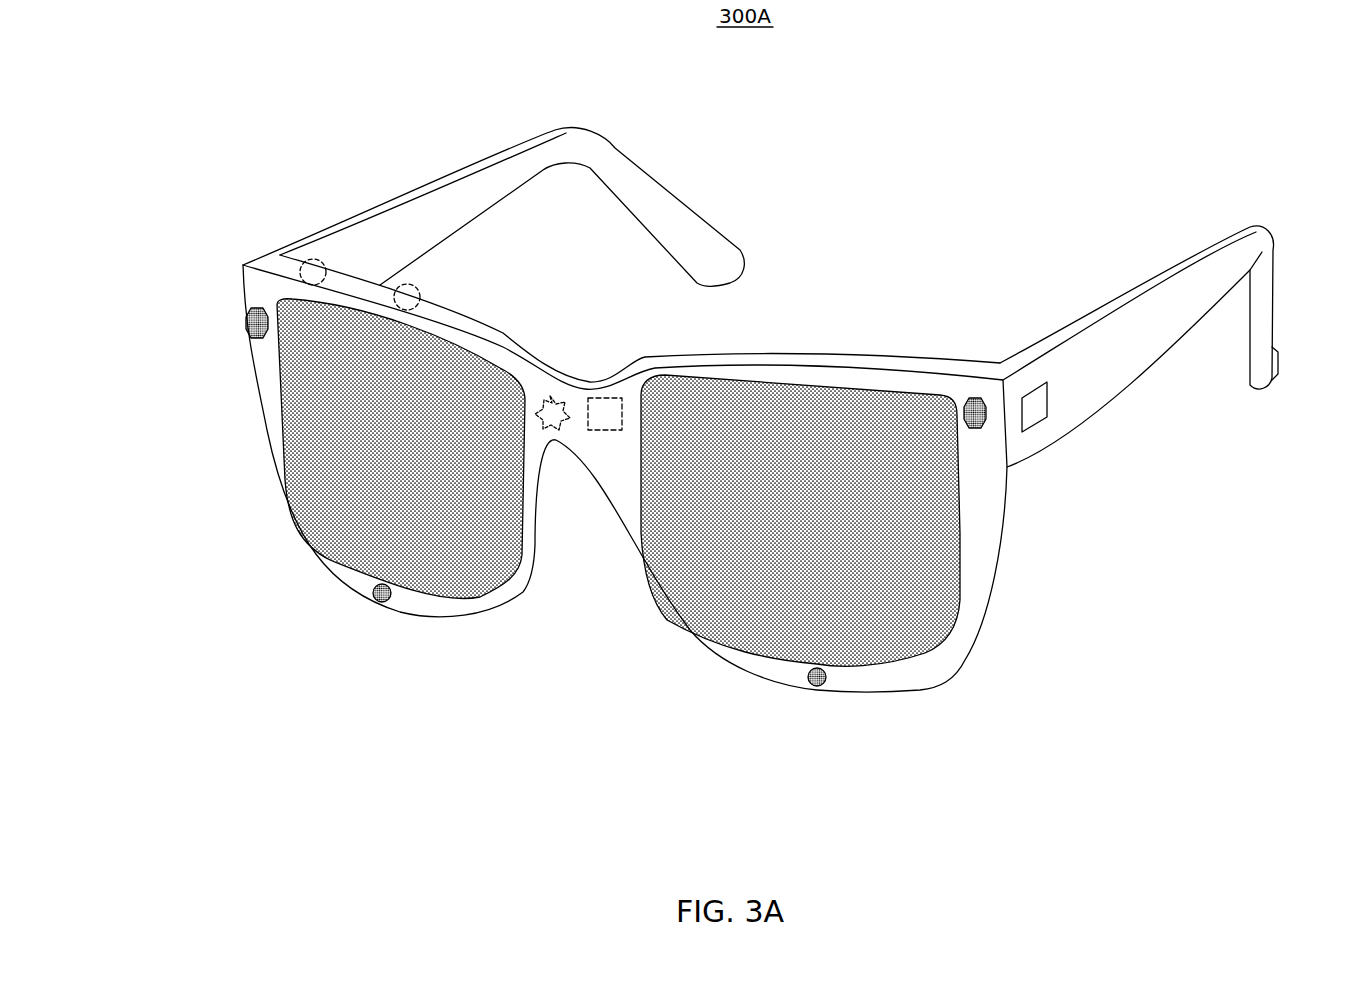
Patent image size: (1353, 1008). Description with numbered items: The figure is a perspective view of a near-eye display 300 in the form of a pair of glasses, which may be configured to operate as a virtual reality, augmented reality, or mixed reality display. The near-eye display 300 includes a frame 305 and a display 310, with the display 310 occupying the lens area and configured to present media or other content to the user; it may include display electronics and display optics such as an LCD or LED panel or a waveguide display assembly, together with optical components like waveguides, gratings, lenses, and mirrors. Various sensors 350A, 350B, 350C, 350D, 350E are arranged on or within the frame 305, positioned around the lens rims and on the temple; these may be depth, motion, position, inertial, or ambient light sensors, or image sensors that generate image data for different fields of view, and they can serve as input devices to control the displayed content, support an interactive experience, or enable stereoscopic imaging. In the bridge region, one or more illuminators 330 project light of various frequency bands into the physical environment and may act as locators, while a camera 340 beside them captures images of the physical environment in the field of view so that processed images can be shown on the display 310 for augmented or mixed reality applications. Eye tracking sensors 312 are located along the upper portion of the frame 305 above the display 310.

The near-eye display 300 is at (840, 150).
The frame 305 is at (1050, 333).
The display 310 is at (347, 533).
The eye tracking sensors 312 is at (388, 300).
The illuminator(s) 330 is at (556, 432).
The camera 340 is at (600, 407).
The sensor 350A is at (1037, 413).
The sensor 350B is at (817, 687).
The sensor 350C is at (383, 603).
The sensor 350D is at (247, 313).
The sensor 350E is at (973, 400).